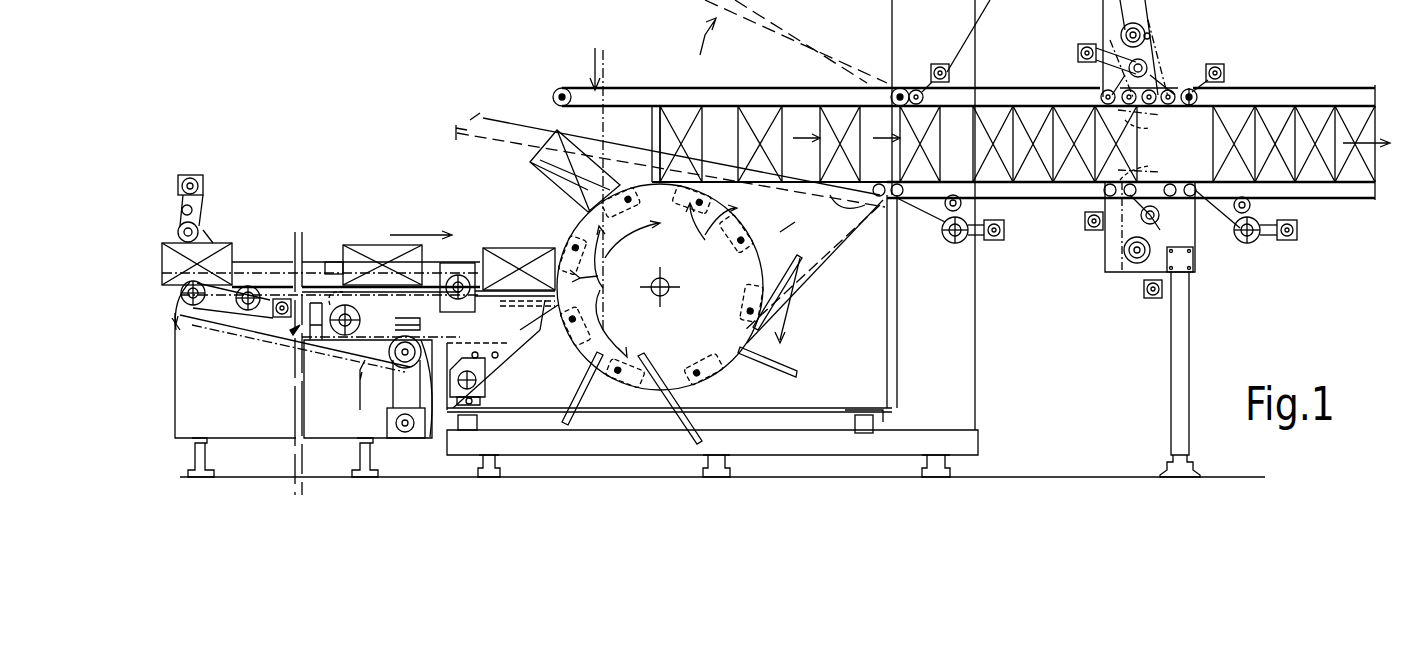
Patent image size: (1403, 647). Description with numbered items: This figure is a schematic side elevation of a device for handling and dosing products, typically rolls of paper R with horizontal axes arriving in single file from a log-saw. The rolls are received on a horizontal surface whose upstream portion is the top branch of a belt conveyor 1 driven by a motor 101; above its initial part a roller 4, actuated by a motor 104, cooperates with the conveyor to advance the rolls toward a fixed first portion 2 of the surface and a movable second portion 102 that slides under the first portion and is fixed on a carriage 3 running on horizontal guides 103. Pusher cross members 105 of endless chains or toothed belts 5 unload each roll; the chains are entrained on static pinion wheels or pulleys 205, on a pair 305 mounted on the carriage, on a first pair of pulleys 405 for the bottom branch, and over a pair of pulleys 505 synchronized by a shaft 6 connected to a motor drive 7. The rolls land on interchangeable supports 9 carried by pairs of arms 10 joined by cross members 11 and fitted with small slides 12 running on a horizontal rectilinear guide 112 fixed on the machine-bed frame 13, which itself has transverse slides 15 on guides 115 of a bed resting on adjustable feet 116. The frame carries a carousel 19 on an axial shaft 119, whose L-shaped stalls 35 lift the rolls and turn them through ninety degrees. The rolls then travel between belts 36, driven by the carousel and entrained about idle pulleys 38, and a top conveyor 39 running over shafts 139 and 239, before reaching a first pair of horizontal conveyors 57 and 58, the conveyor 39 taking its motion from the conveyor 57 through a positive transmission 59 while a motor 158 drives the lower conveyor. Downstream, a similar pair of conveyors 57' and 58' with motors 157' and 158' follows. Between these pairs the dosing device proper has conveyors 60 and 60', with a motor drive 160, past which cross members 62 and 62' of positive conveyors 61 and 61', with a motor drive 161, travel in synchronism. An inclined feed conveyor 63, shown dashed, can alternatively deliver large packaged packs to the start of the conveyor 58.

The belt conveyor 1 is at (222, 310).
The fixed first portion 2 is at (278, 285).
The carriage 3 is at (432, 305).
The roller 4 is at (180, 229).
The chains or toothed belts 5 is at (364, 375).
The shaft 6 is at (398, 362).
The motor drive 7 is at (372, 462).
The supports 9 is at (524, 290).
The arms 10 is at (508, 345).
The cross members 11 is at (477, 358).
The small slides 12 is at (478, 403).
The machine-bed structure or frame 13 is at (910, 357).
The transverse slides 15 is at (472, 404).
The carousel 19 is at (738, 373).
The L-shaped stall 35 is at (823, 322).
The belts 36 is at (845, 208).
The idle pulleys 38 is at (888, 205).
The top conveyor 39 is at (594, 53).
The horizontal conveyor 57 is at (1013, 104).
The conveyor 57' is at (1301, 102).
The horizontal conveyor 58 is at (1124, 213).
The conveyor 58' is at (1304, 223).
The positive transmission of motion 59 is at (913, 90).
The conveyor 60 is at (1127, 240).
The conveyor 60' is at (1146, 48).
The toothed-belt or chain positive conveyor 61 is at (1217, 234).
The toothed-belt or chain positive conveyor 61' is at (1165, 58).
The cross member 62 is at (1148, 237).
The cross member 62' is at (1160, 125).
The inclined feed conveyor 63 is at (485, 112).
The motor 101 is at (280, 318).
The movable second portion 102 is at (434, 285).
The horizontal guides 103 is at (316, 343).
The motor 104 is at (200, 186).
The pusher cross members 105 is at (336, 268).
The horizontal rectilinear guide 112 is at (472, 405).
The guides 115 is at (468, 431).
The adjustable feet 116 is at (735, 455).
The axial shaft 119 is at (664, 294).
The shaft 139 is at (554, 92).
The motor 157' is at (1234, 46).
The motor 158 is at (1025, 269).
The motor 158' is at (1306, 277).
The motor drive 160 is at (1082, 44).
The motor drive 161 is at (1157, 300).
The pinion wheels or pulleys 205 is at (190, 315).
The shaft 239 is at (894, 90).
The pinion wheels or pulleys 305 is at (460, 287).
The pulleys or pinion wheels 405 is at (346, 310).
The pulleys 505 is at (425, 440).
The rolls of paper R is at (212, 246).